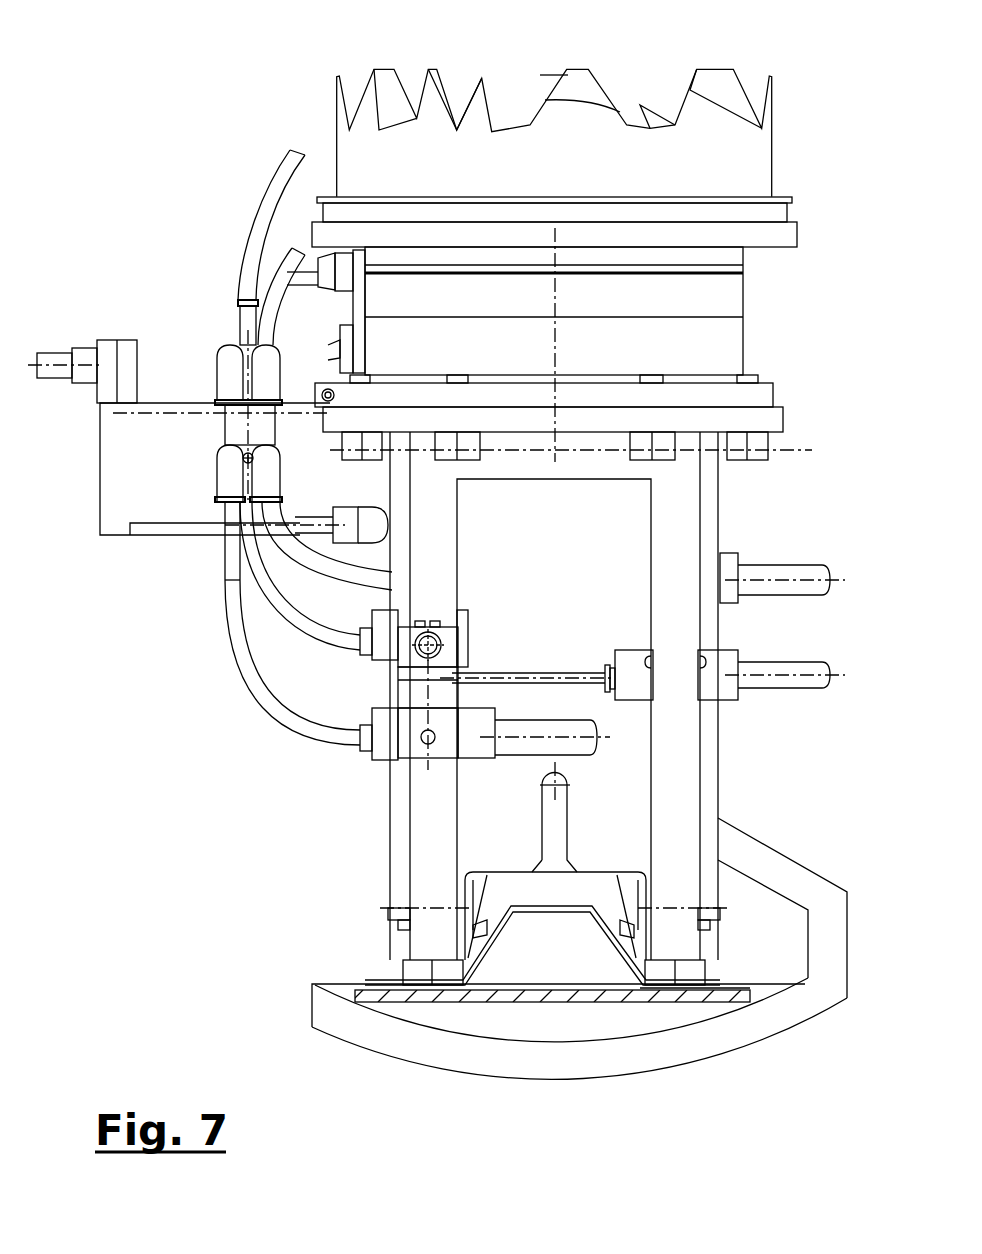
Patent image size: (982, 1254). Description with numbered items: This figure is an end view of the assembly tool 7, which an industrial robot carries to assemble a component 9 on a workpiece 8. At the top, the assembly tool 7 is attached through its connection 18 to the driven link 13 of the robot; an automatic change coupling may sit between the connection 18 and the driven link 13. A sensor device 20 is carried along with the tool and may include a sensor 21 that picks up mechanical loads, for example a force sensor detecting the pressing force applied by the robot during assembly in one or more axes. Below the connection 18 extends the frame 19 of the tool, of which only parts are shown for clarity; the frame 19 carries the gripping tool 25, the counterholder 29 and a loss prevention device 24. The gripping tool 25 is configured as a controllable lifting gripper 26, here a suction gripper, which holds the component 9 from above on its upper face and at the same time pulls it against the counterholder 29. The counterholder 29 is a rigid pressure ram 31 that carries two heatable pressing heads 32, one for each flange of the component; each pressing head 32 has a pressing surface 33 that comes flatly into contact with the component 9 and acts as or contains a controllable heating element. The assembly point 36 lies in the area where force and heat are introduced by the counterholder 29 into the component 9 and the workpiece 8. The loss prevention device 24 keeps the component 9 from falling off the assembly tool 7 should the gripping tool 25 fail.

The driven link 13 is at (617, 172).
The sensor 21 is at (713, 302).
The connection 18 is at (765, 425).
The sensor device 20 is at (190, 382).
The assembly tool 7 is at (230, 673).
The pressure ram 31 is at (672, 858).
The frame 19 is at (588, 457).
The counterholder 29 is at (372, 785).
The component 9 is at (535, 912).
The pressing head 32 is at (408, 970).
The gripping tool 25 is at (782, 884).
The lifting gripper 26 is at (755, 825).
The loss prevention device 24 is at (579, 1052).
The assembly point 36 is at (425, 1008).
The workpiece 8 is at (520, 993).
The pressing surface 33 is at (667, 1003).